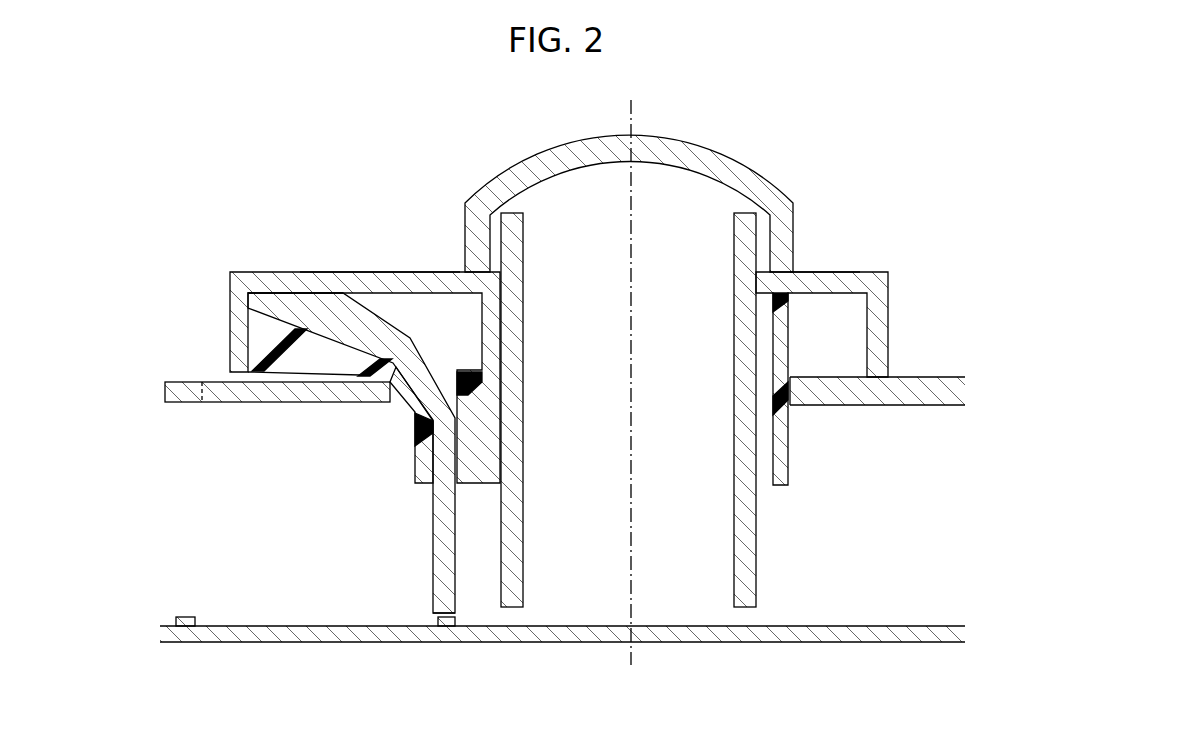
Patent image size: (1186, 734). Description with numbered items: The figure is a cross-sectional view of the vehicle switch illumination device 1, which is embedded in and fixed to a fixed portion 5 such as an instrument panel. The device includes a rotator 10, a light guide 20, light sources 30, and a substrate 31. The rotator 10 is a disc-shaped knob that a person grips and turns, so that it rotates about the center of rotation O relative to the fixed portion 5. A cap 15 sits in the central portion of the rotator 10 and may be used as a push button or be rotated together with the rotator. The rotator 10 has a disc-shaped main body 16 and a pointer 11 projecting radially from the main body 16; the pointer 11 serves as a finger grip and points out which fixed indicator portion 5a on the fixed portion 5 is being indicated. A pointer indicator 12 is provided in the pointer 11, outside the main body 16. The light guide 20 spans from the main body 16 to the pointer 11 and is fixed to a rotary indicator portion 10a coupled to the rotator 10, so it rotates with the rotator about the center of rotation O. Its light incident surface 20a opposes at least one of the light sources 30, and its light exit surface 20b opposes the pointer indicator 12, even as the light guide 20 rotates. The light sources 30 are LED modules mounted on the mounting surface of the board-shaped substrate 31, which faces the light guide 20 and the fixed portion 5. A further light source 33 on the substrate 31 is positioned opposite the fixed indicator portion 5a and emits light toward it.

The center of rotation O is at (630, 120).
The vehicle switch illumination device 1 is at (629, 340).
The cap 15 is at (662, 137).
The pointer 11 is at (350, 350).
The pointer indicator 12 is at (313, 288).
The light guide 20 is at (351, 424).
The light exit surface 20b is at (295, 291).
The light incident surface 20a is at (437, 622).
The rotary indicator portion 10a is at (417, 451).
The rotator 10 is at (830, 353).
The main body 16 is at (822, 273).
The fixed portion 5 is at (919, 374).
The fixed indicator portion 5a is at (190, 388).
The light source 30 is at (443, 632).
The substrate 31 is at (522, 644).
The light source 33 is at (185, 630).